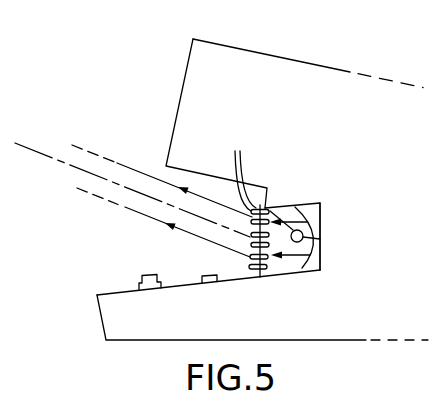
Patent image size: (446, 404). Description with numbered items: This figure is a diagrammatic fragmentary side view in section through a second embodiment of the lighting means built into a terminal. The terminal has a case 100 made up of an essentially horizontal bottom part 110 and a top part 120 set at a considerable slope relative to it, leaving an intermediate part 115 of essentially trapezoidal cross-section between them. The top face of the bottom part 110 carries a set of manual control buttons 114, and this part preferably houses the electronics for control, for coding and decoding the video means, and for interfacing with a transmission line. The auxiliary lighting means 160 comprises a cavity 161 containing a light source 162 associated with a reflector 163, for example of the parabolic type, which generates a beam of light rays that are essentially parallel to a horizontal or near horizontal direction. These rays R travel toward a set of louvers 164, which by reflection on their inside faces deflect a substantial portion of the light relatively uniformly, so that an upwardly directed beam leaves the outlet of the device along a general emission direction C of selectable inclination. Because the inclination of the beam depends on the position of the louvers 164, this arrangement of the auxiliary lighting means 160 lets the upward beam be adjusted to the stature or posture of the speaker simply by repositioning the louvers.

The case 100 is at (170, 52).
The bottom part 110 is at (261, 328).
The manual control buttons 114 is at (140, 277).
The intermediate part 115 is at (416, 234).
The top part 120 is at (308, 122).
The auxiliary lighting means 160 is at (297, 287).
The cavity 161 is at (321, 204).
The light source 162 is at (290, 205).
The reflector 163 is at (320, 239).
The louvers 164 is at (237, 152).
The general emission direction C is at (38, 150).
The rods R is at (153, 180).